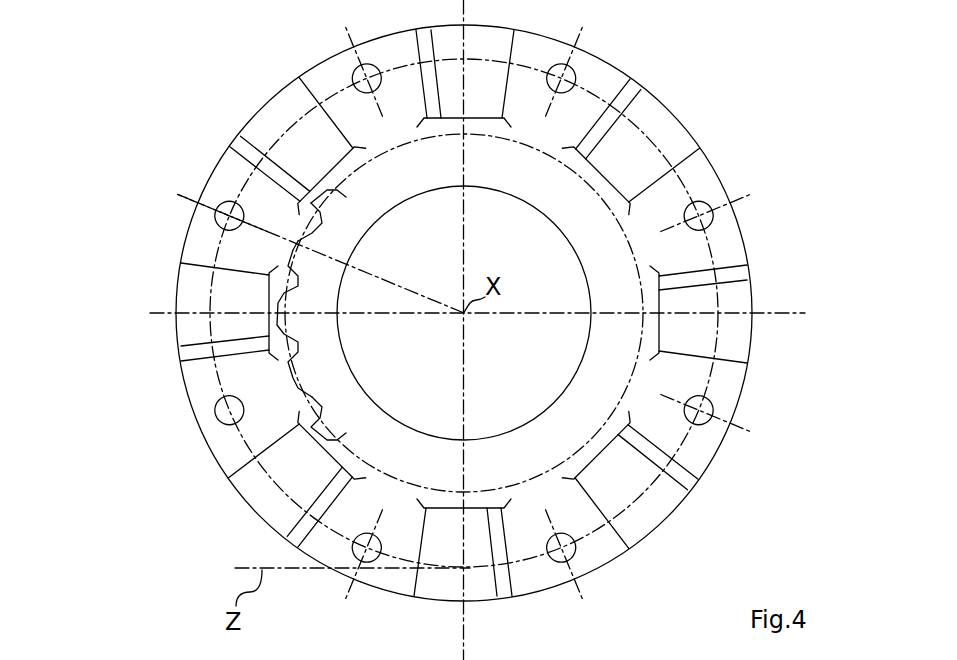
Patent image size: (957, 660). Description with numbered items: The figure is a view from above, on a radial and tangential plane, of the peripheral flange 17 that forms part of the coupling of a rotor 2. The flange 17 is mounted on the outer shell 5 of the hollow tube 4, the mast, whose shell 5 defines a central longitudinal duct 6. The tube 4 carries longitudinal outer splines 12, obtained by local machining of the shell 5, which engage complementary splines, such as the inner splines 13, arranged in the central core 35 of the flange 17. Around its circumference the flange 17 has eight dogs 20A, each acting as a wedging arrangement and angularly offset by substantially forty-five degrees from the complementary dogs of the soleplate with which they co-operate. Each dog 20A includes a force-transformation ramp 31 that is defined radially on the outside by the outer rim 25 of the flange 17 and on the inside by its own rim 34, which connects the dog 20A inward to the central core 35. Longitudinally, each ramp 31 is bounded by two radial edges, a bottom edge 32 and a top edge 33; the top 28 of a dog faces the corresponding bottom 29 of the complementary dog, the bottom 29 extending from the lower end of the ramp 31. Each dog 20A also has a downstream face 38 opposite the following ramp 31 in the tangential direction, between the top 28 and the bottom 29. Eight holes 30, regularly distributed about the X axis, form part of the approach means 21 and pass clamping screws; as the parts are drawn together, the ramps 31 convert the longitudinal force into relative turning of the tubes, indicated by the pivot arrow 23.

The rotor 2 is at (100, 157).
The hollow tube 4 is at (615, 266).
The outer shell 5 is at (377, 420).
The longitudinal duct 6 is at (508, 245).
The outer splines 12 is at (328, 212).
The inner splines 13 is at (303, 231).
The peripheral flange 17 is at (130, 370).
The dog 20A is at (742, 338).
The approach means 21 is at (700, 420).
The pivot arrow 23 is at (222, 36).
The outer rim 25 is at (747, 243).
The top 28 is at (443, 593).
The bottom 29 is at (392, 577).
The hole 30 is at (217, 400).
The force-transformation ramp 31 is at (505, 588).
The bottom edge 32 is at (616, 80).
The top edge 33 is at (643, 102).
The own rim 34 is at (615, 177).
The central core 35 is at (300, 340).
The downstream face 38 is at (240, 470).